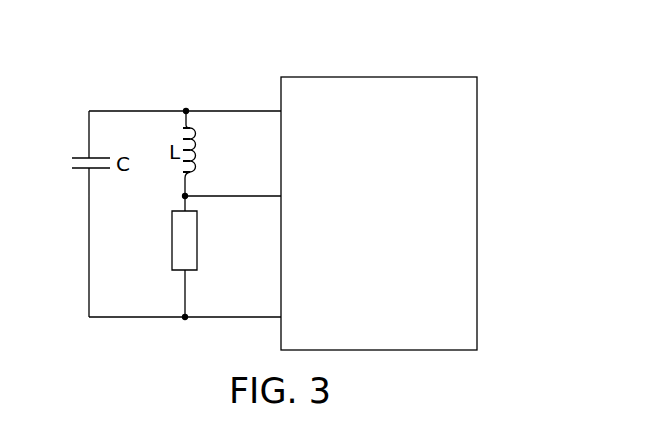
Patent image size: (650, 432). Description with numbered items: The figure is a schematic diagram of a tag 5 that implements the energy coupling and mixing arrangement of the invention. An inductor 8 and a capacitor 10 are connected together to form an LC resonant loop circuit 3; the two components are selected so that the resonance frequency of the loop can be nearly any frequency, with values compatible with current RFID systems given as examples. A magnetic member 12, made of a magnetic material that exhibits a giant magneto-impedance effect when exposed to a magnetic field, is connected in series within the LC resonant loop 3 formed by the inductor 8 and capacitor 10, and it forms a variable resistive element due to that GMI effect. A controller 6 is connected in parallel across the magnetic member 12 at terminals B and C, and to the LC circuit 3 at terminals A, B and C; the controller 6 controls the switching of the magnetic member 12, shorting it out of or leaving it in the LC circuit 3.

The LC resonant loop circuit 3 is at (147, 108).
The tag 5 is at (524, 210).
The controller 6 is at (396, 77).
The inductor 8 is at (200, 150).
The capacitor 10 is at (74, 163).
The magnetic member 12 is at (172, 242).